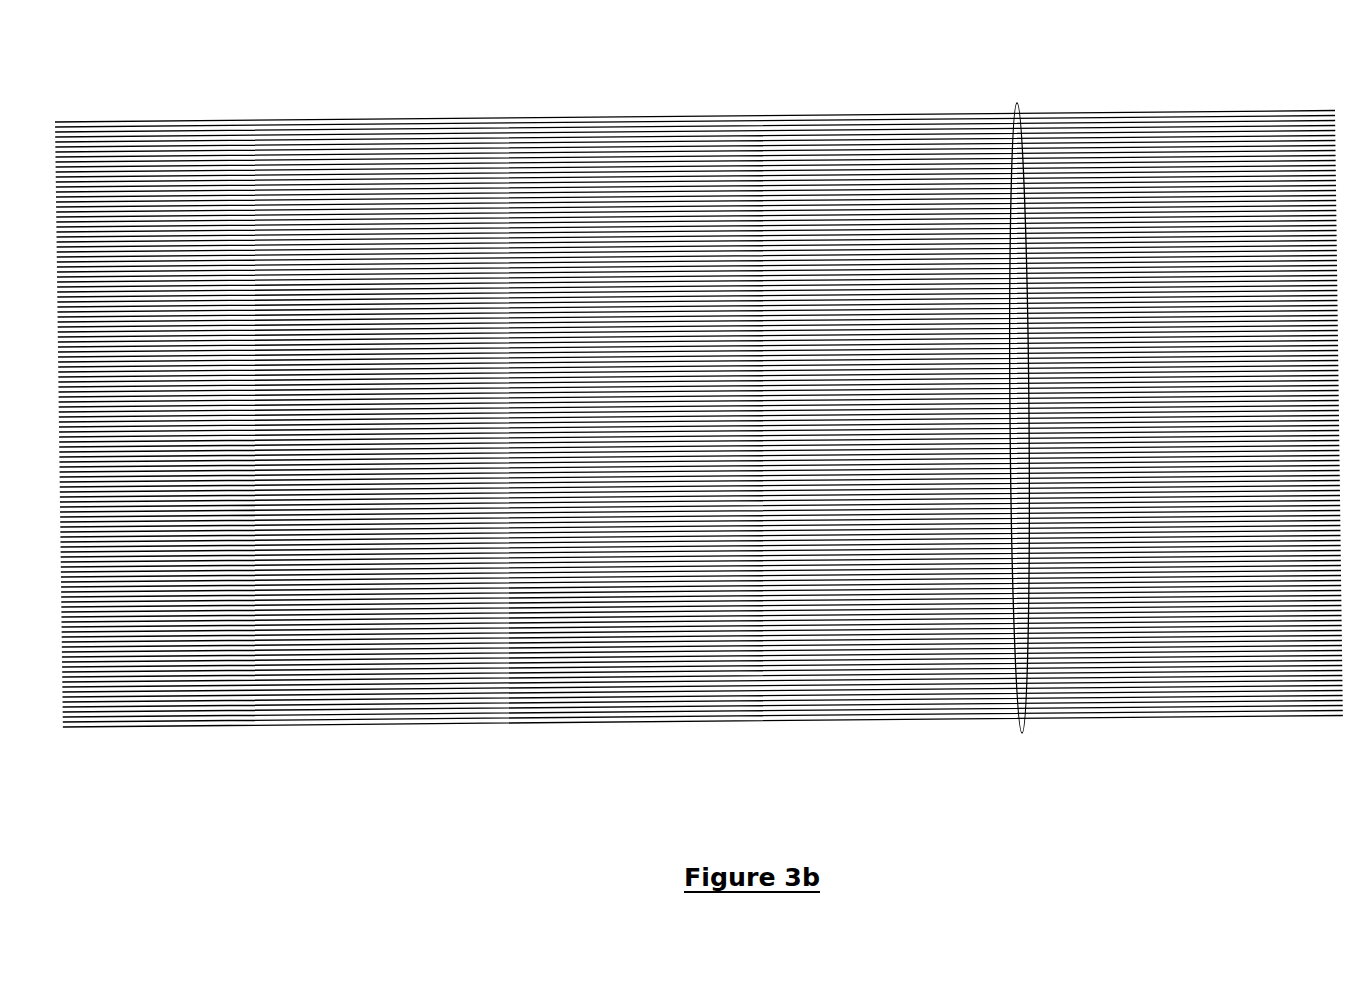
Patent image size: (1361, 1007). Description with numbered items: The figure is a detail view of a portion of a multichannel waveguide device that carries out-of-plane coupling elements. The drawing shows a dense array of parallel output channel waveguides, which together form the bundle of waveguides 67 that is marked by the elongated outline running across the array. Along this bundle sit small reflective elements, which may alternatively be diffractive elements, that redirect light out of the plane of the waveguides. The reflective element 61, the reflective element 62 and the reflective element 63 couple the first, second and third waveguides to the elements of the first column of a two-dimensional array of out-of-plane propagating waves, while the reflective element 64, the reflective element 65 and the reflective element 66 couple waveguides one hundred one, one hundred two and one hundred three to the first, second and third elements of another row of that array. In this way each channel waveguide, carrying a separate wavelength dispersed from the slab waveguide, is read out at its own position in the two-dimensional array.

The reflective element 61 is at (62, 114).
The reflective element 62 is at (617, 114).
The reflective element 63 is at (1173, 117).
The reflective element 64 is at (72, 677).
The reflective element 65 is at (624, 678).
The reflective element 66 is at (1178, 679).
The bundle of waveguides 67 is at (1022, 670).